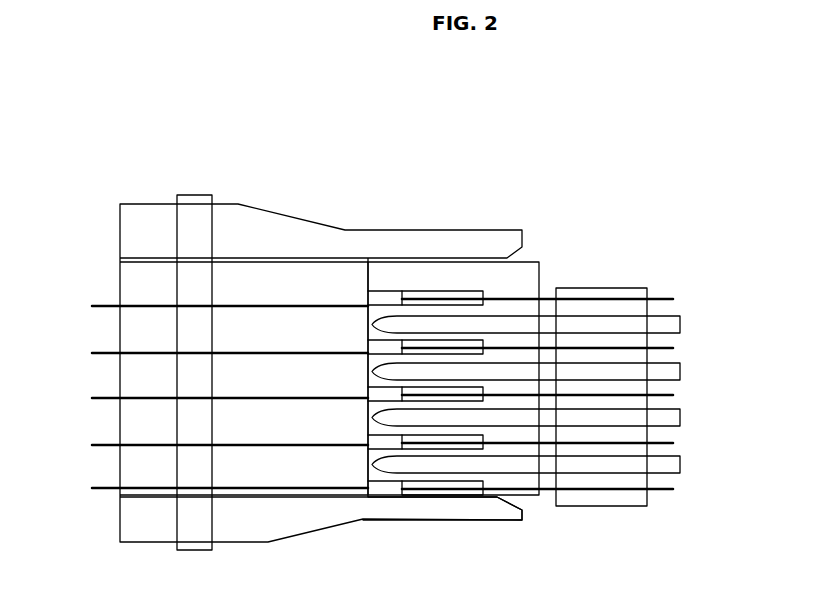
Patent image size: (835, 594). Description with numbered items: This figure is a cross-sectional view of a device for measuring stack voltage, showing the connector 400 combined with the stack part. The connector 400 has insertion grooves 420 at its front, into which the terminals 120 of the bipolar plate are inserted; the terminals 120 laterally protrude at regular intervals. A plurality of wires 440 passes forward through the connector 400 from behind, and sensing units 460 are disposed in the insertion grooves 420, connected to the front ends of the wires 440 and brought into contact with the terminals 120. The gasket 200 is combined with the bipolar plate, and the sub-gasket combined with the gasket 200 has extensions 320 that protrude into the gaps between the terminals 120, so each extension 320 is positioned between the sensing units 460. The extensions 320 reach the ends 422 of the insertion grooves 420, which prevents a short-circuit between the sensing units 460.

The terminals 120 is at (670, 298).
The gasket 200 is at (597, 293).
The extensions 320 is at (663, 463).
The connector 400 is at (143, 165).
The insertion grooves 420 is at (483, 277).
The ends 422 is at (372, 412).
The wires 440 is at (133, 352).
The sensing units 460 is at (387, 293).